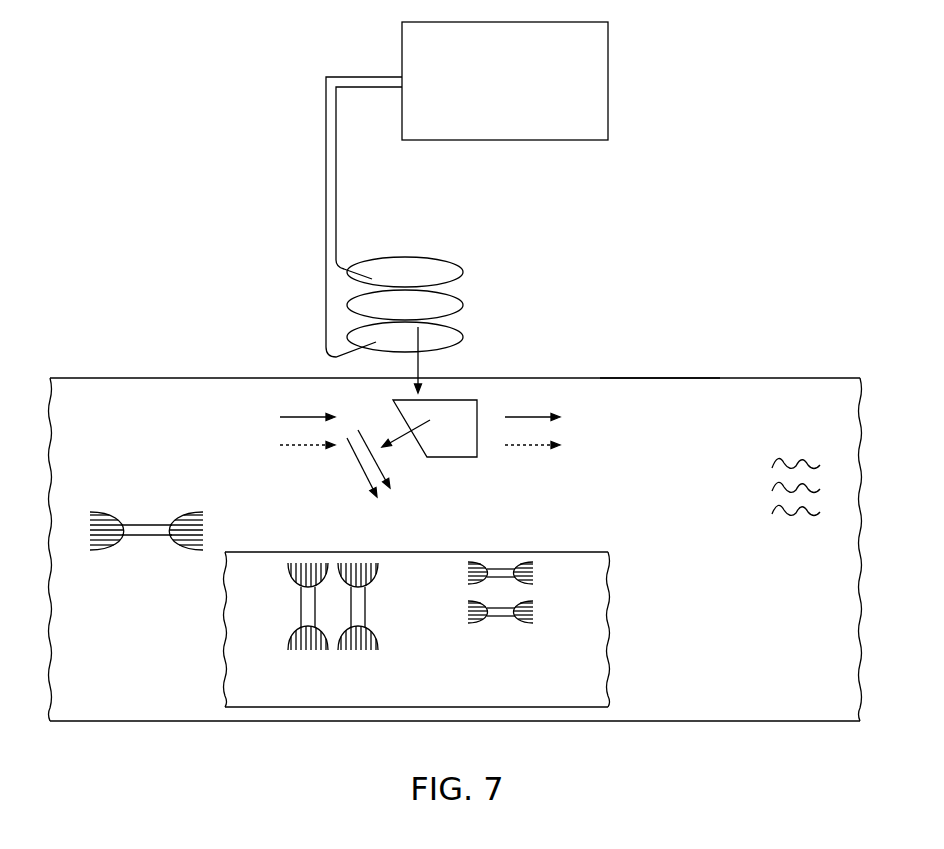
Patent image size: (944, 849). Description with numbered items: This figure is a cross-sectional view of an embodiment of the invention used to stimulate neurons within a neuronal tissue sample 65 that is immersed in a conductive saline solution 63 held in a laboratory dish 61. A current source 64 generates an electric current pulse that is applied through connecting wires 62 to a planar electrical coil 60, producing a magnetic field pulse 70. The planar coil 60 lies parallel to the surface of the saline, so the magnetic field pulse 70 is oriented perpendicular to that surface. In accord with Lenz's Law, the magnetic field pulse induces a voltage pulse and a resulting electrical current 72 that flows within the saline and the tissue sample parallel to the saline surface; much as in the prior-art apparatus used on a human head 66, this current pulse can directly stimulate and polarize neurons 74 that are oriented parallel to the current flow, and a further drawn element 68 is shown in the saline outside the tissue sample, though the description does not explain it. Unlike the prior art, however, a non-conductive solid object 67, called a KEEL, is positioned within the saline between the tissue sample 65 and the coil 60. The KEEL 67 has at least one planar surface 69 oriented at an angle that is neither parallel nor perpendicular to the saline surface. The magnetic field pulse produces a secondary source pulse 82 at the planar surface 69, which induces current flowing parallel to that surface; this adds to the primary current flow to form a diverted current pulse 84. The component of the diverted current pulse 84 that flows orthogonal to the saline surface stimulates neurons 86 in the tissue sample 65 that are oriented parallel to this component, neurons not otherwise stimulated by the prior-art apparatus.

The planar electrical coil 60 is at (464, 273).
The laboratory dish 61 is at (788, 378).
The connecting wires 62 is at (326, 150).
The conductive saline solution 63 is at (775, 463).
The current source 64 is at (609, 77).
The neuronal tissue sample 65 is at (235, 661).
The head 66 is at (665, 400).
The non-conductive solid object (KEEL) 67 is at (466, 410).
The nanoparticle dumbbell 68 is at (102, 550).
The planar surface 69 is at (397, 408).
The magnetic field pulse 70 is at (417, 365).
The electrical current 72 is at (280, 417).
The neurons 74 is at (530, 575).
The secondary source pulse 82 is at (399, 438).
The diverted current pulse 84 is at (363, 471).
The neurons 86 is at (301, 610).